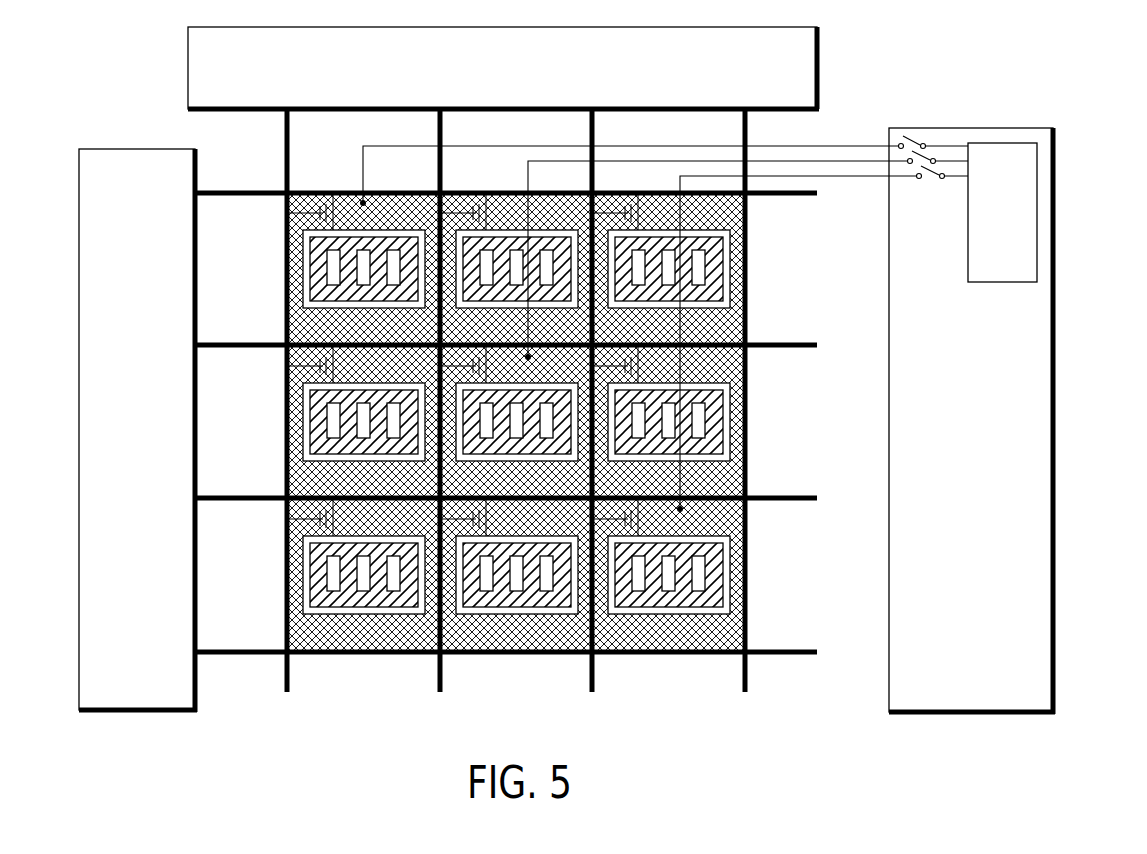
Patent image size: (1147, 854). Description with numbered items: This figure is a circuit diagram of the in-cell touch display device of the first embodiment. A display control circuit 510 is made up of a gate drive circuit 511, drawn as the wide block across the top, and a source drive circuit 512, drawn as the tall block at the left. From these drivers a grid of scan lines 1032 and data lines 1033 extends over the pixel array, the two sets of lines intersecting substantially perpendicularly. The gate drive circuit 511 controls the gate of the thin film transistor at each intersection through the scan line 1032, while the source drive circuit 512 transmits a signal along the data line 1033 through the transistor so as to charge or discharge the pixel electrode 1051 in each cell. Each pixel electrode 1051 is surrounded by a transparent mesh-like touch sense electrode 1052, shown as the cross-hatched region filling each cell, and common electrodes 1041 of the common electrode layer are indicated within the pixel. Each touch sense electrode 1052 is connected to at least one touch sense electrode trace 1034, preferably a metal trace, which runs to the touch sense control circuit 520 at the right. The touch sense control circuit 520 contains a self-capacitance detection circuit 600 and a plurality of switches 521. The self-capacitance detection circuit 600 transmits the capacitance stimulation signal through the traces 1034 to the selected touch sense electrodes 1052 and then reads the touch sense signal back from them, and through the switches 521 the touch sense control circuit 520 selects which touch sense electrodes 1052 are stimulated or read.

The display control circuit 510 is at (97, 60).
The gate drive circuit 511 is at (187, 55).
The source drive circuit 512 is at (122, 150).
The touch sense control circuit 520 is at (975, 128).
The switches 521 is at (928, 182).
The self-capacitance detection circuit 600 is at (997, 233).
The scan line 1032 is at (285, 135).
The data line 1033 is at (242, 192).
The touch sense electrode trace 1034 is at (858, 146).
The common electrode 1041 is at (700, 420).
The pixel electrode 1051 is at (712, 447).
The touch sense electrode 1052 is at (728, 365).